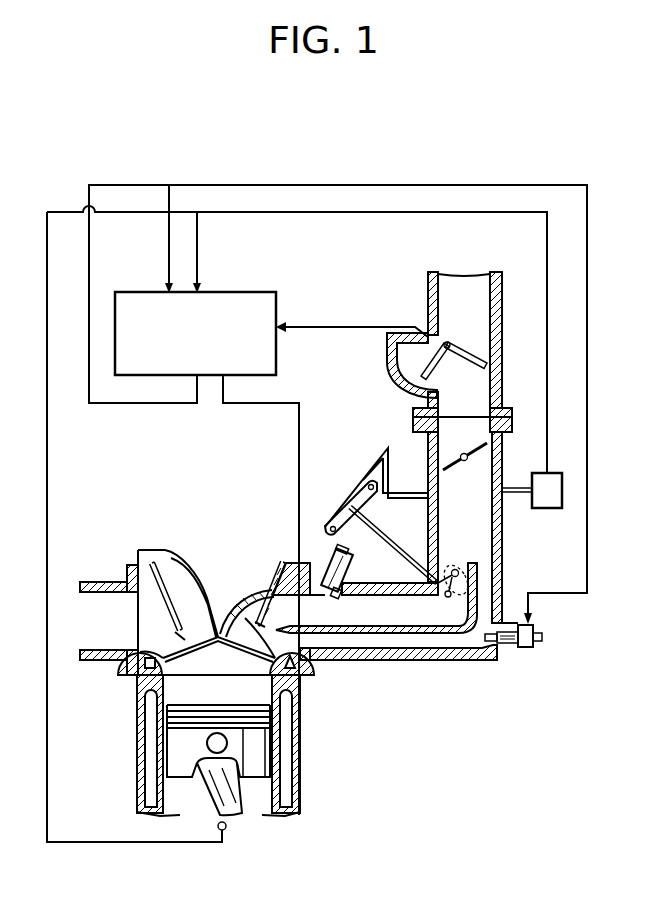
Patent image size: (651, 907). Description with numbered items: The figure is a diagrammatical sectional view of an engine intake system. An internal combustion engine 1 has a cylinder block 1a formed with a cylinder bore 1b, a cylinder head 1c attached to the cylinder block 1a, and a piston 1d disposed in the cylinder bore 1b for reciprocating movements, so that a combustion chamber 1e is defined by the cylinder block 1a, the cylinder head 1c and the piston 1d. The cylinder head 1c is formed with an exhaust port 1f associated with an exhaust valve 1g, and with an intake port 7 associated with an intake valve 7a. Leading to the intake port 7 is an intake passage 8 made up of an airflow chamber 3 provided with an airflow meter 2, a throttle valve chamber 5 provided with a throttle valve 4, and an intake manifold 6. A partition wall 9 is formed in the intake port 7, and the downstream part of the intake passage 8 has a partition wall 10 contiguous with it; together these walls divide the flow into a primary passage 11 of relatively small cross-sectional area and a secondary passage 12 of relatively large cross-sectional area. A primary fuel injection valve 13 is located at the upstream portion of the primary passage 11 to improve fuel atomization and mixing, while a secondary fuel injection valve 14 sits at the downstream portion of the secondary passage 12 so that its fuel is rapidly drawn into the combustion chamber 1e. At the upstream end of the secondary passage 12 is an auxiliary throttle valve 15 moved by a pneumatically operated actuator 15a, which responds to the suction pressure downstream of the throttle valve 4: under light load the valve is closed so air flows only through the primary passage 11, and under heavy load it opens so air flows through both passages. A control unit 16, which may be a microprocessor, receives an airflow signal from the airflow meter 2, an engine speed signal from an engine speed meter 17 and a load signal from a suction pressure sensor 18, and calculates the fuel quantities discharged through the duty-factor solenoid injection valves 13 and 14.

The internal combustion engine 1 is at (195, 575).
The cylinder block 1a is at (297, 741).
The cylinder bore 1b is at (167, 705).
The cylinder head 1c is at (275, 570).
The piston 1d is at (177, 758).
The combustion chamber 1e is at (168, 674).
The exhaust port 1f is at (122, 665).
The exhaust valve 1g is at (180, 633).
The airflow meter 2 is at (455, 347).
The airflow chamber 3 is at (450, 366).
The throttle valve 4 is at (456, 461).
The throttle valve chamber 5 is at (450, 434).
The intake manifold 6 is at (445, 660).
The intake port 7 is at (250, 607).
The intake valve 7a is at (195, 587).
The intake passage 8 is at (472, 523).
The partition wall 9 is at (312, 665).
The partition wall 10 is at (365, 634).
The primary passage 11 is at (403, 641).
The secondary passage 12 is at (378, 602).
The primary fuel injection valve 13 is at (527, 650).
The secondary fuel injection valve 14 is at (328, 565).
The auxiliary throttle valve 15 is at (440, 570).
The pneumatically operated actuator 15a is at (352, 485).
The control unit 16 is at (265, 292).
The engine speed meter 17 is at (226, 828).
The suction pressure sensor 18 is at (548, 508).